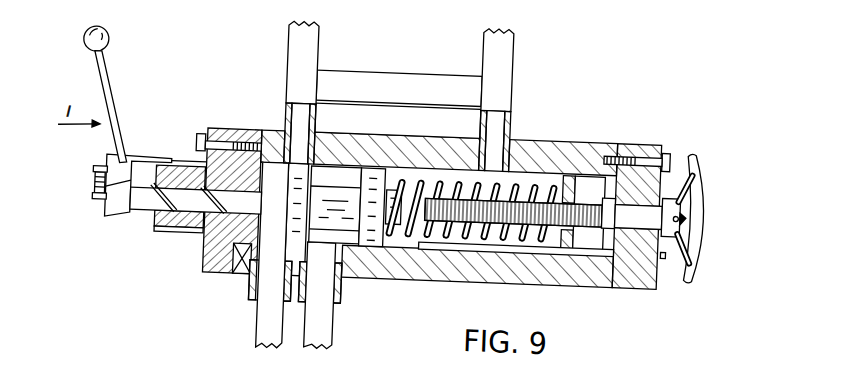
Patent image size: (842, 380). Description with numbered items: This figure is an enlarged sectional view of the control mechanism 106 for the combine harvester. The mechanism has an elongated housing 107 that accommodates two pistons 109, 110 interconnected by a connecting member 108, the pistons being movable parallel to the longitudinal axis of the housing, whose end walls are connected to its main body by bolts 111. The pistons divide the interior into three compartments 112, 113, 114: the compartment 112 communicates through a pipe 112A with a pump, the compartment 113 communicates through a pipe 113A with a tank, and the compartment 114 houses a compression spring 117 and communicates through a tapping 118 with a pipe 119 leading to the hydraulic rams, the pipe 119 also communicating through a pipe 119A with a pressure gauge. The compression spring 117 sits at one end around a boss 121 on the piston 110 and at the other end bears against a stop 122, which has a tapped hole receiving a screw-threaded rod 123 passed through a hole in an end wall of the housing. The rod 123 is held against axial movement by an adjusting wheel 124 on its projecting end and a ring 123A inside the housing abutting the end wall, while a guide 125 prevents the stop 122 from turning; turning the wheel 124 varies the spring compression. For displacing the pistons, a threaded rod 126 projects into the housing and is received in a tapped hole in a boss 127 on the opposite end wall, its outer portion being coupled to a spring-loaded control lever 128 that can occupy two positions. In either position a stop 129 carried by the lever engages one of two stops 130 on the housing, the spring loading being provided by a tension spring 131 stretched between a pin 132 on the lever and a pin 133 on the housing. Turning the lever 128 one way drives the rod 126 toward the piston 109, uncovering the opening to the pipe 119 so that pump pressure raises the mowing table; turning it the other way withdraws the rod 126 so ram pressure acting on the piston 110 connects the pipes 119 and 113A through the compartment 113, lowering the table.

The control mechanism 106 is at (573, 128).
The housing 107 is at (581, 266).
The connecting member 108 is at (380, 190).
The piston 109 is at (339, 185).
The piston 110 is at (397, 183).
The bolts 111 is at (206, 138).
The compartment 112 is at (252, 272).
The pipe 112A is at (262, 321).
The compartment 113 is at (363, 272).
The pipe 113A is at (341, 326).
The compartment 114 is at (475, 260).
The compression spring 117 is at (452, 255).
The tapping 118 is at (414, 68).
The pipe 119 is at (285, 47).
The pipe 119A is at (510, 59).
The boss 121 is at (398, 262).
The stop 122 is at (585, 163).
The screw-threaded rod 123 is at (654, 267).
The ring 123A is at (616, 268).
The adjusting wheel 124 is at (699, 264).
The guide 125 is at (522, 270).
The rod 126 is at (198, 234).
The boss 127 is at (168, 236).
The control lever 128 is at (106, 88).
The stop 129 is at (148, 160).
The stops 130 is at (160, 235).
The tension spring 131 is at (97, 191).
The pin 132 is at (97, 174).
The pin 133 is at (97, 204).